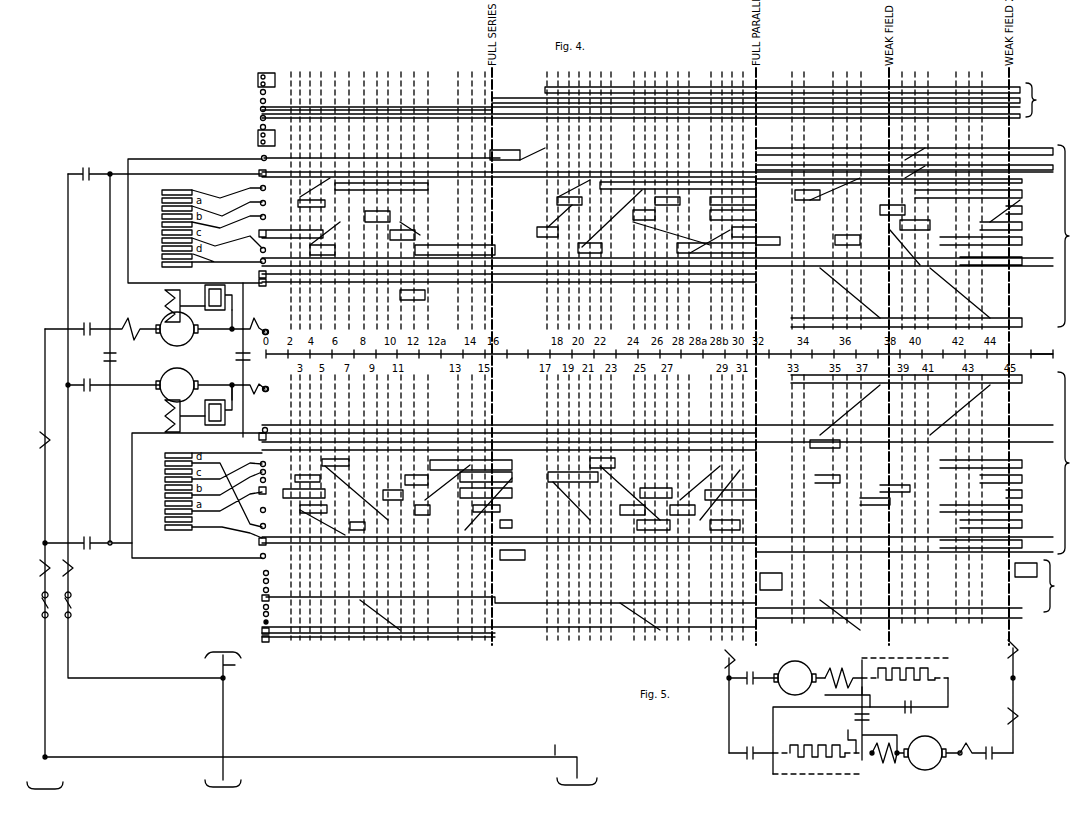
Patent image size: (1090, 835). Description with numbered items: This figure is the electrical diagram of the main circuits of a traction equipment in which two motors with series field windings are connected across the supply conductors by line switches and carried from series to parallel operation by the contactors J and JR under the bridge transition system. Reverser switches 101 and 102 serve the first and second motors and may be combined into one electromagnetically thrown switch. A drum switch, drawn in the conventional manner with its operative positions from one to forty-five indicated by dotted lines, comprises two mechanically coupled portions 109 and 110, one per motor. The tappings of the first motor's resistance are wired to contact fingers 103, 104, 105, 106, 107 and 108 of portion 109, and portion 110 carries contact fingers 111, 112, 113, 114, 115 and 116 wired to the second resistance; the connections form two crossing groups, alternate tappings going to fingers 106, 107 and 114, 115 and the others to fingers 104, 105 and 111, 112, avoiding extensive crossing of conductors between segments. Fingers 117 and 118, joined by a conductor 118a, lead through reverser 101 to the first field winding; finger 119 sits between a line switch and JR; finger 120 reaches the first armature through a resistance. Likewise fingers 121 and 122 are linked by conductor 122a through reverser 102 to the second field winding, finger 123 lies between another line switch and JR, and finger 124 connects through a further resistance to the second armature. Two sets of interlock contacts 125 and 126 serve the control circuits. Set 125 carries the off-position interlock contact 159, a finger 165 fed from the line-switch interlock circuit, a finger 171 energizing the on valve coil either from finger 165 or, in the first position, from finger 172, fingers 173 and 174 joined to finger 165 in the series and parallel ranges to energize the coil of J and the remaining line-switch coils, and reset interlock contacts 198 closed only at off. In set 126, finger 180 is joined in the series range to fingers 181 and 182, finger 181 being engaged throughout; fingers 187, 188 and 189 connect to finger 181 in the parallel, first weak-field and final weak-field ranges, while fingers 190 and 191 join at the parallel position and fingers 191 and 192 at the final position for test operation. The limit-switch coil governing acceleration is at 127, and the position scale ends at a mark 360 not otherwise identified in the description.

The reverser switch 101 is at (217, 405).
The reverser switch 102 is at (217, 303).
The contact finger 103 is at (274, 520).
The contact finger 104 is at (274, 505).
The contact finger 105 is at (273, 484).
The contact finger 106 is at (274, 468).
The contact finger 107 is at (261, 462).
The contact finger 108 is at (259, 437).
The drum switch portion 109 is at (673, 504).
The drum switch portion 110 is at (673, 236).
The contact finger 111 is at (274, 187).
The contact finger 112 is at (274, 202).
The contact finger 113 is at (274, 216).
The contact finger 114 is at (266, 250).
The contact finger 115 is at (260, 261).
The contact finger 116 is at (259, 275).
The contact finger 117 is at (275, 553).
The contact finger 118 is at (273, 423).
The conductor 118a is at (197, 495).
The contact finger 119 is at (259, 541).
The contact finger 120 is at (277, 389).
The contact finger 121 is at (261, 157).
The contact finger 122 is at (264, 286).
The conductor 122a is at (195, 221).
The contact finger 123 is at (260, 171).
The contact finger 124 is at (276, 324).
The interlock contacts 125 is at (658, 100).
The interlock contacts 126 is at (915, 586).
The limit switch operating coil 127 is at (34, 441).
The interlock contact 159 is at (267, 73).
The contact finger 165 is at (260, 109).
The contact finger 171 is at (260, 118).
The contact finger 172 is at (260, 127).
The contact finger 173 is at (260, 101).
The contact finger 174 is at (260, 92).
The contact finger 180 is at (662, 356).
The contact finger 181 is at (254, 630).
The contact finger 182 is at (254, 640).
The contact finger 187 is at (278, 606).
The contact finger 188 is at (263, 614).
The contact finger 189 is at (277, 622).
The contact finger 190 is at (278, 588).
The contact finger 191 is at (263, 582).
The contact finger 192 is at (254, 573).
The interlock contacts 198 is at (270, 146).
The controller position scale 360 is at (1051, 345).